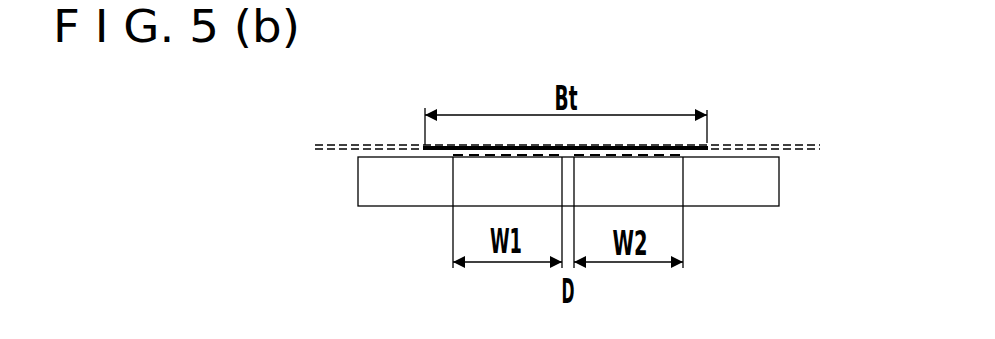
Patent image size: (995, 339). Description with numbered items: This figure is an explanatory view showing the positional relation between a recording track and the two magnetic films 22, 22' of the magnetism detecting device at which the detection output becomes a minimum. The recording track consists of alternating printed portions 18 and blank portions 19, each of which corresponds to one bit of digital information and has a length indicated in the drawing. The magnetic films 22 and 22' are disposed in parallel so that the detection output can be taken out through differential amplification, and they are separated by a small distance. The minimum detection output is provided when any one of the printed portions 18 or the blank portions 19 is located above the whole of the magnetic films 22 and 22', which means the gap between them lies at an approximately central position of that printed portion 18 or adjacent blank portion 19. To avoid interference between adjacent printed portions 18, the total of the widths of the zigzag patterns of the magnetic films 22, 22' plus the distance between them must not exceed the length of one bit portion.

The printed portion 18 is at (635, 147).
The blank portion 19 is at (341, 144).
The magnetic film 22 is at (473, 225).
The magnetic film 22' is at (673, 233).